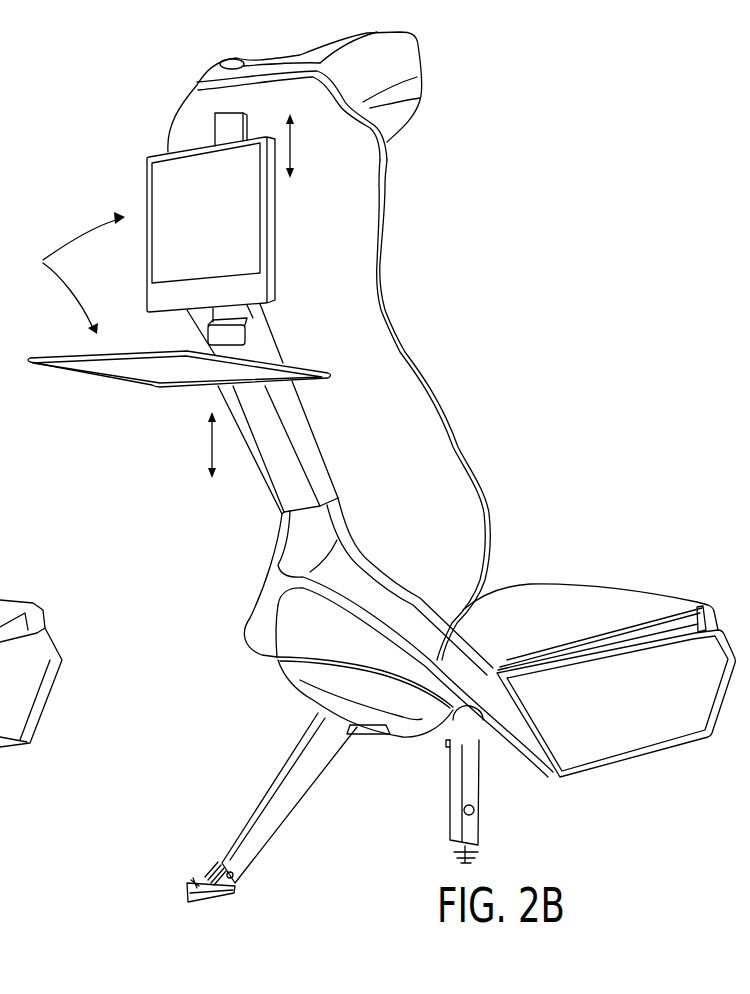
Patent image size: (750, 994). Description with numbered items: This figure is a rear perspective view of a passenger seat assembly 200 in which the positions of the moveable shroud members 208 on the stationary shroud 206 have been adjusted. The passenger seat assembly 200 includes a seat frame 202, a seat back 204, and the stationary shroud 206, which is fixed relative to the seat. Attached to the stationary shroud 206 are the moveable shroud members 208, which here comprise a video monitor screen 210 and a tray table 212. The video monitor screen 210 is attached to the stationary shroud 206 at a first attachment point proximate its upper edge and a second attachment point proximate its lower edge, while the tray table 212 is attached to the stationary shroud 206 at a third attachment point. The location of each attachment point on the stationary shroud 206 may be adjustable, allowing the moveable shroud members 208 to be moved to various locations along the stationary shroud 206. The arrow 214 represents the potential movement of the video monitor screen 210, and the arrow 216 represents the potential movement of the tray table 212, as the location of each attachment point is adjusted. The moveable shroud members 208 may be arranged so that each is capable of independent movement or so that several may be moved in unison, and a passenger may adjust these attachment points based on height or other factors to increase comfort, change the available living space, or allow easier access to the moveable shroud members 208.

The passenger seat assembly 200 is at (610, 118).
The seat frame 202 is at (638, 735).
The seat back 204 is at (443, 447).
The stationary shroud 206 is at (305, 532).
The moveable shroud members 208 is at (62, 273).
The video monitor screen 210 is at (147, 162).
The tray table 212 is at (78, 368).
The arrow 214 is at (290, 143).
The arrow 216 is at (210, 440).